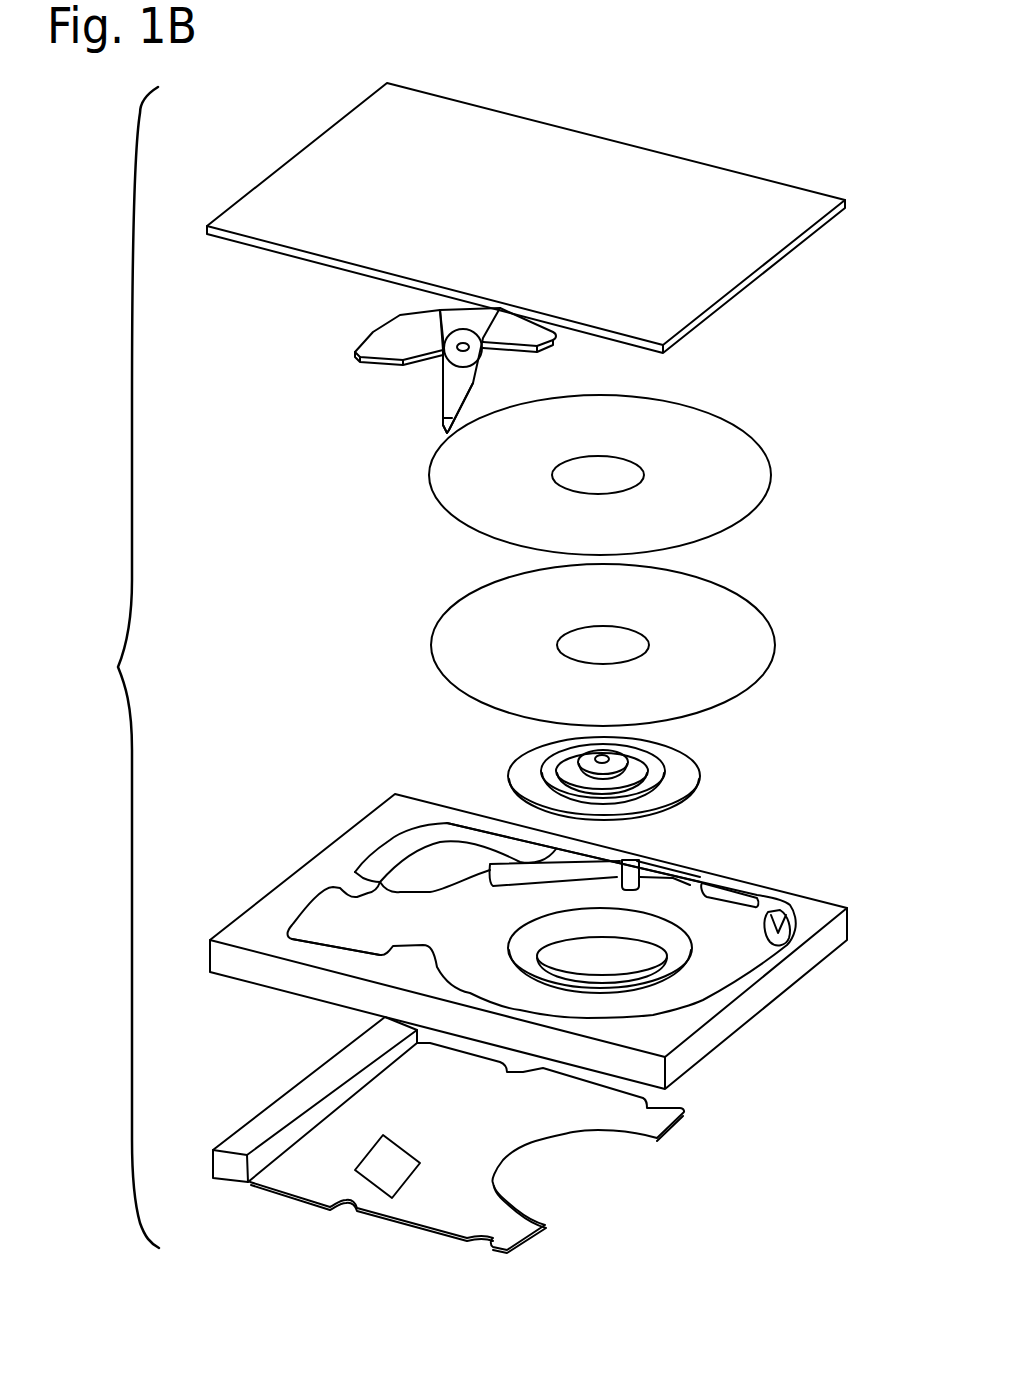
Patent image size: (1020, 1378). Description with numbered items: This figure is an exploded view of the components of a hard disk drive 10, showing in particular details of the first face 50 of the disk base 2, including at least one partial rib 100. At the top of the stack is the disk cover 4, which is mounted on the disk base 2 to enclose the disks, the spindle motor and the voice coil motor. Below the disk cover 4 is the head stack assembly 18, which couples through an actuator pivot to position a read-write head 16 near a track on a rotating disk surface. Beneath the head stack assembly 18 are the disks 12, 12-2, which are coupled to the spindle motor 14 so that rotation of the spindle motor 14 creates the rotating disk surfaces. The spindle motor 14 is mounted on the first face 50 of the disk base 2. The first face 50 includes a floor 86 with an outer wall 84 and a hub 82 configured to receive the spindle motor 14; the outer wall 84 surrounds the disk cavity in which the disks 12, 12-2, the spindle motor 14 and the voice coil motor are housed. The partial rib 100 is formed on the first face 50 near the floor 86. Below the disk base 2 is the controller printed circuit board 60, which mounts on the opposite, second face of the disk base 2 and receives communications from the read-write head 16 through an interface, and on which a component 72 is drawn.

The hard disk drive 10 is at (120, 667).
The disk cover 4 is at (763, 273).
The head stack assembly 18 is at (332, 310).
The read-write head 16 is at (442, 418).
The disk 12 is at (750, 510).
The disk 12-2 is at (773, 663).
The spindle motor 14 is at (632, 762).
The disk base 2 is at (777, 1003).
The first face 50 is at (702, 855).
The partial rib 100 is at (612, 878).
The floor 86 is at (463, 943).
The outer wall 84 is at (690, 885).
The hub 82 is at (600, 950).
The controller printed circuit board 60 is at (670, 1130).
The connector pad 72 is at (413, 1173).